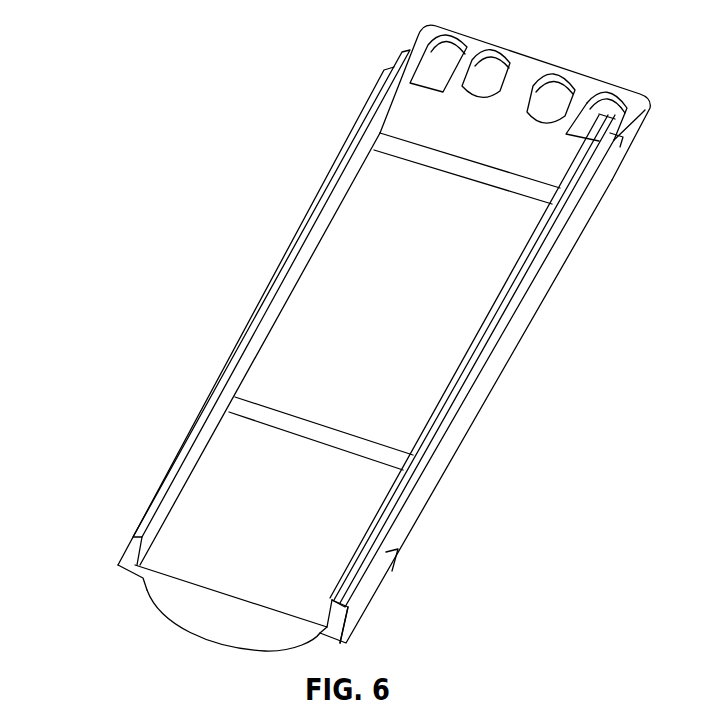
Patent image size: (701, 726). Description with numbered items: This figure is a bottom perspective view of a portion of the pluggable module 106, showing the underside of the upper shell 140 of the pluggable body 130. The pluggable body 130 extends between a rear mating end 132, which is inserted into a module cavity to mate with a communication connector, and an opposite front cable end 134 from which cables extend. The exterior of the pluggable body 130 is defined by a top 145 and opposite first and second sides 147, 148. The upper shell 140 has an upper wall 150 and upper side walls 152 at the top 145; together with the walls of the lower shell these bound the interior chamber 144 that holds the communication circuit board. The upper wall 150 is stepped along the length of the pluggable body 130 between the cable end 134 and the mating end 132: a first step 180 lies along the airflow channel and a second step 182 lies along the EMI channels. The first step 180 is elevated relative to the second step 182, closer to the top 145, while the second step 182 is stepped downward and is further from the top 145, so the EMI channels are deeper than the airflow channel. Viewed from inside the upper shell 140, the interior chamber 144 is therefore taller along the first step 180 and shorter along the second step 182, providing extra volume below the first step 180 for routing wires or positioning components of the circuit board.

The pluggable module 106 is at (221, 220).
The pluggable body 130 is at (473, 410).
The mating end 132 is at (570, 62).
The cable end 134 is at (262, 628).
The upper shell 140 is at (563, 242).
The interior chamber 144 is at (343, 268).
The top 145 is at (443, 475).
The first side 147 is at (512, 347).
The second side 148 is at (240, 330).
The upper wall 150 is at (472, 282).
The upper side walls 152 is at (167, 463).
The first step 180 is at (298, 332).
The second step 182 is at (193, 552).